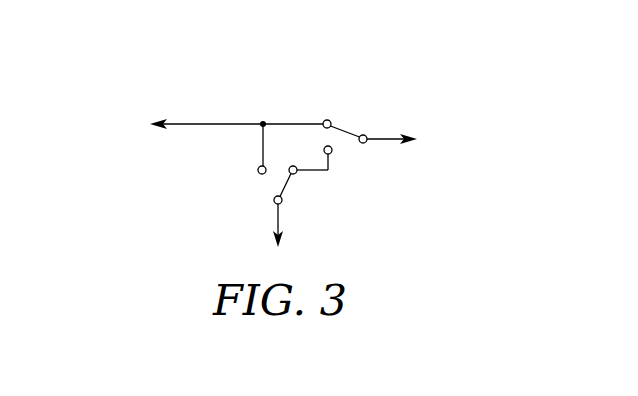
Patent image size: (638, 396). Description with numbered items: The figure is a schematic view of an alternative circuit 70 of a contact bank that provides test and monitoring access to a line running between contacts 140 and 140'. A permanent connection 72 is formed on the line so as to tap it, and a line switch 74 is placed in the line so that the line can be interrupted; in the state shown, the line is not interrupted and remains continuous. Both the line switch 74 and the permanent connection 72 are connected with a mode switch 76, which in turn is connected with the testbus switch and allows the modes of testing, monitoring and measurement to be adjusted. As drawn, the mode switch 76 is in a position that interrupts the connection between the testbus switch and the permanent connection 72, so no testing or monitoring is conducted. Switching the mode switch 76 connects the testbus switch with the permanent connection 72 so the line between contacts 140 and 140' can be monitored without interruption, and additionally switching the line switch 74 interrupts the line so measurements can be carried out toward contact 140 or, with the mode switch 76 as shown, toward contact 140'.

The circuit 70 is at (163, 197).
The permanent connection 72 is at (263, 121).
The line switch 74 is at (347, 127).
The mode switch 76 is at (275, 173).
The contact 140 is at (181, 123).
The contact 140' is at (420, 138).